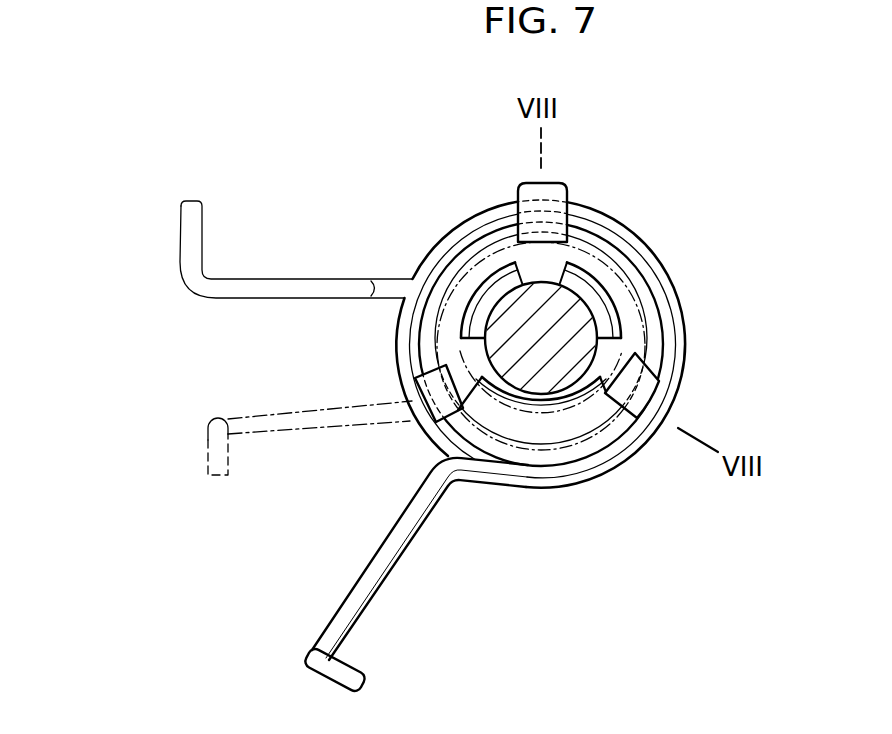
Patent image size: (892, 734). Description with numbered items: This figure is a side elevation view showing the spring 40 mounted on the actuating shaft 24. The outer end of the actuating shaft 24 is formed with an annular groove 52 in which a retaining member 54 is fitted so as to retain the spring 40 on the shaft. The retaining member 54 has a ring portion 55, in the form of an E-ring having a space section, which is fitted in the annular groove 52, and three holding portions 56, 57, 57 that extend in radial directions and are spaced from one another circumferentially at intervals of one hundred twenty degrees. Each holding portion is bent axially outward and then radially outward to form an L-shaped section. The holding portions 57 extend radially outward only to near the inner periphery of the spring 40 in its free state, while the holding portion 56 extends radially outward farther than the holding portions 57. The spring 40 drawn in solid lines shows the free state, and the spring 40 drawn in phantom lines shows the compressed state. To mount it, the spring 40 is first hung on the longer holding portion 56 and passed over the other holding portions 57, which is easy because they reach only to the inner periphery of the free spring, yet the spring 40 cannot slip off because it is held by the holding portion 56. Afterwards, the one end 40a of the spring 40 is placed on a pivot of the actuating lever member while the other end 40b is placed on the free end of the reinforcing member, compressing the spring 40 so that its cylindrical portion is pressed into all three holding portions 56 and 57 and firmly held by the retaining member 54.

The actuating shaft 24 is at (553, 298).
The spring 40 is at (672, 281).
The one end of the spring 40a is at (272, 287).
The other end of the spring 40b is at (360, 590).
The annular groove 52 is at (517, 396).
The retaining member 54 is at (599, 404).
The ring portion 55 is at (622, 358).
The holding portion 56 is at (548, 194).
The holding portions 57 is at (425, 378).